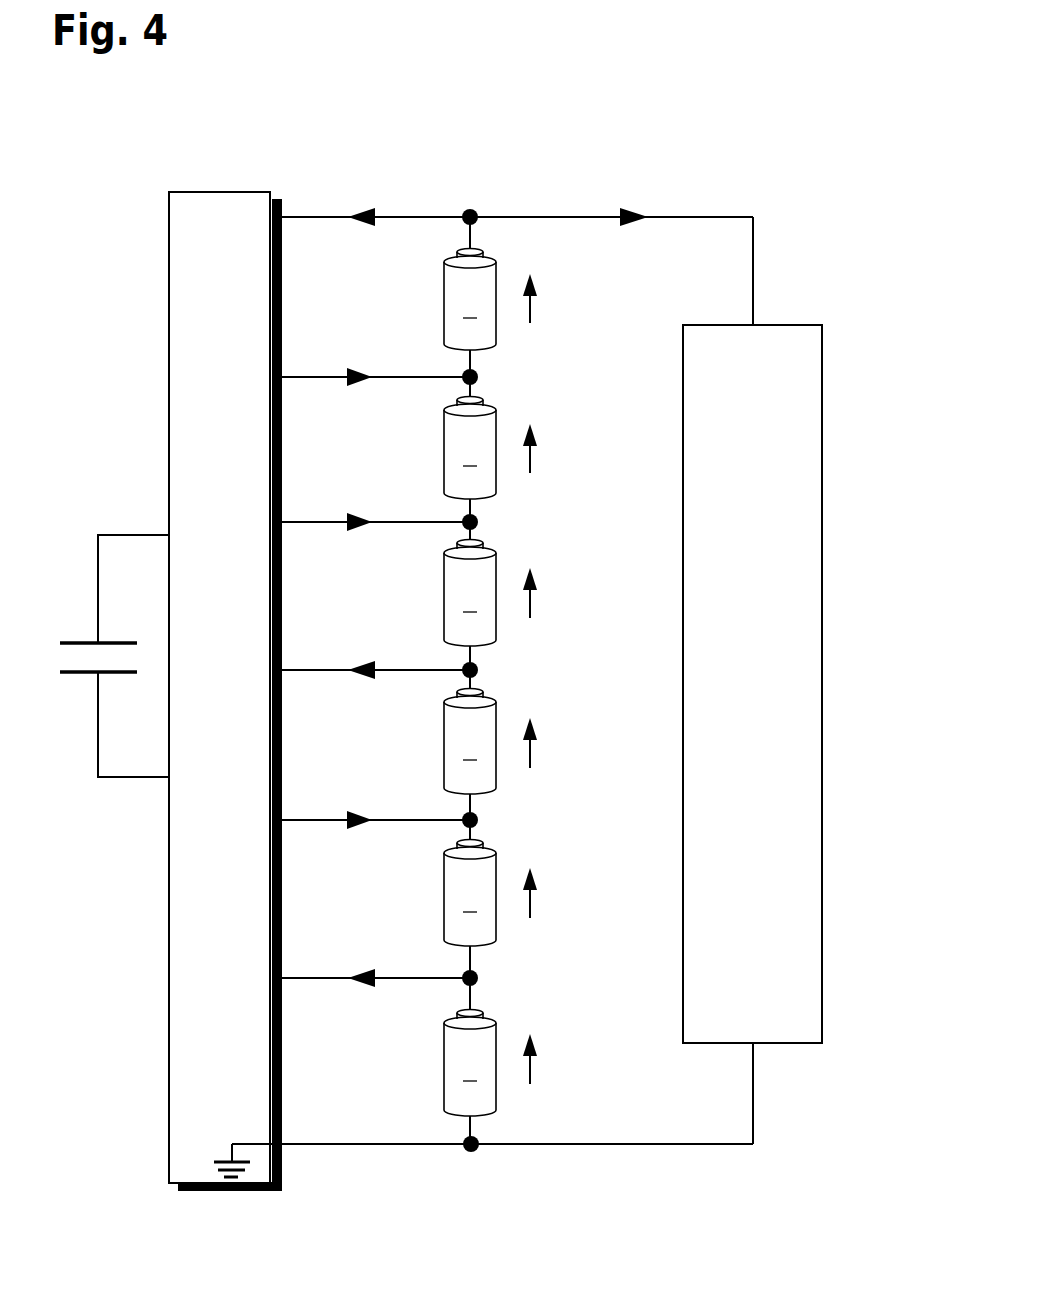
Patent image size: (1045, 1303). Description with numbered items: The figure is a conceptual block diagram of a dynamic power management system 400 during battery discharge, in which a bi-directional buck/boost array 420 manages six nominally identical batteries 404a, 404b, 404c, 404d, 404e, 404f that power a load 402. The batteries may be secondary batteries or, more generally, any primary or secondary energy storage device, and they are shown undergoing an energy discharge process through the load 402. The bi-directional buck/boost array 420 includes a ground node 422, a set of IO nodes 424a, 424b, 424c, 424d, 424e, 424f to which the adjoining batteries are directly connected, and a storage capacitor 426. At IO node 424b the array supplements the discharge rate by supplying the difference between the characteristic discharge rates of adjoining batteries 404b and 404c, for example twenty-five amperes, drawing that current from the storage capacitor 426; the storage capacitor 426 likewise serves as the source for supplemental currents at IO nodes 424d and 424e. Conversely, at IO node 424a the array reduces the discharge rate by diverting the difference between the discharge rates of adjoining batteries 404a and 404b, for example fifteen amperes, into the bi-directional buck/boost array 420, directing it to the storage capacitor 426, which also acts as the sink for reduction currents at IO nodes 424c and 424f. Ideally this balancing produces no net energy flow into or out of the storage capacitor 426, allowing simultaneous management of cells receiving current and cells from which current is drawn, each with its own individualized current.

The dynamic power management system 400 is at (740, 119).
The load 402 is at (822, 672).
The battery 404a is at (444, 1060).
The battery 404b is at (444, 890).
The battery 404c is at (444, 740).
The battery 404d is at (444, 589).
The battery 404e is at (444, 444).
The battery 404f is at (444, 297).
The bi-directional buck/boost array 420 is at (169, 305).
The ground node 422 is at (478, 1149).
The IO node 424a is at (478, 980).
The IO node 424b is at (478, 822).
The IO node 424c is at (478, 672).
The IO node 424d is at (478, 524).
The IO node 424e is at (478, 379).
The IO node 424f is at (460, 224).
The storage capacitor 426 is at (76, 676).